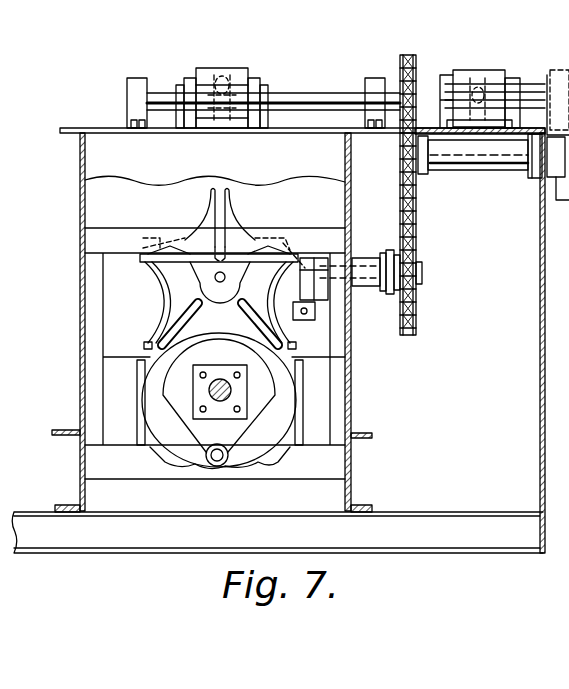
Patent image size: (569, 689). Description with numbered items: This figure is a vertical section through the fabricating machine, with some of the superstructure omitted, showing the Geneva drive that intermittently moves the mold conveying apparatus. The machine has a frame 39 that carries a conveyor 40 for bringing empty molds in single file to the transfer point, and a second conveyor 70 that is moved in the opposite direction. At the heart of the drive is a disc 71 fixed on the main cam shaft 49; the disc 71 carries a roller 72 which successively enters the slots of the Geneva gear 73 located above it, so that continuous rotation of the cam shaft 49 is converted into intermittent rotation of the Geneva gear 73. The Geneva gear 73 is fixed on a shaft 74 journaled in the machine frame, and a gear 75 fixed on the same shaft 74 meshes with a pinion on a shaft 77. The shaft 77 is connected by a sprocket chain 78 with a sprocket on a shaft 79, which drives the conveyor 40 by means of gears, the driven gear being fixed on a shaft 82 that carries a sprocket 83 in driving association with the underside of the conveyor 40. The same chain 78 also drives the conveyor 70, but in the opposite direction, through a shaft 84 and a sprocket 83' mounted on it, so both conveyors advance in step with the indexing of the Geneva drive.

The frame 39 is at (90, 373).
The shaft 84 is at (313, 96).
The conveyor 70 is at (230, 68).
The sprocket 83' is at (213, 75).
The sprocket chain 78 is at (416, 262).
The conveyor 40 is at (498, 70).
The sprocket 83 is at (473, 77).
The shaft 82 is at (530, 95).
The shaft 79 is at (471, 165).
The gear 75 is at (196, 230).
The shaft 74 is at (223, 273).
The Geneva gear 73 is at (178, 298).
The shaft 77 is at (322, 302).
The disc 71 is at (180, 398).
The main cam shaft 49 is at (219, 402).
The roller 72 is at (218, 467).